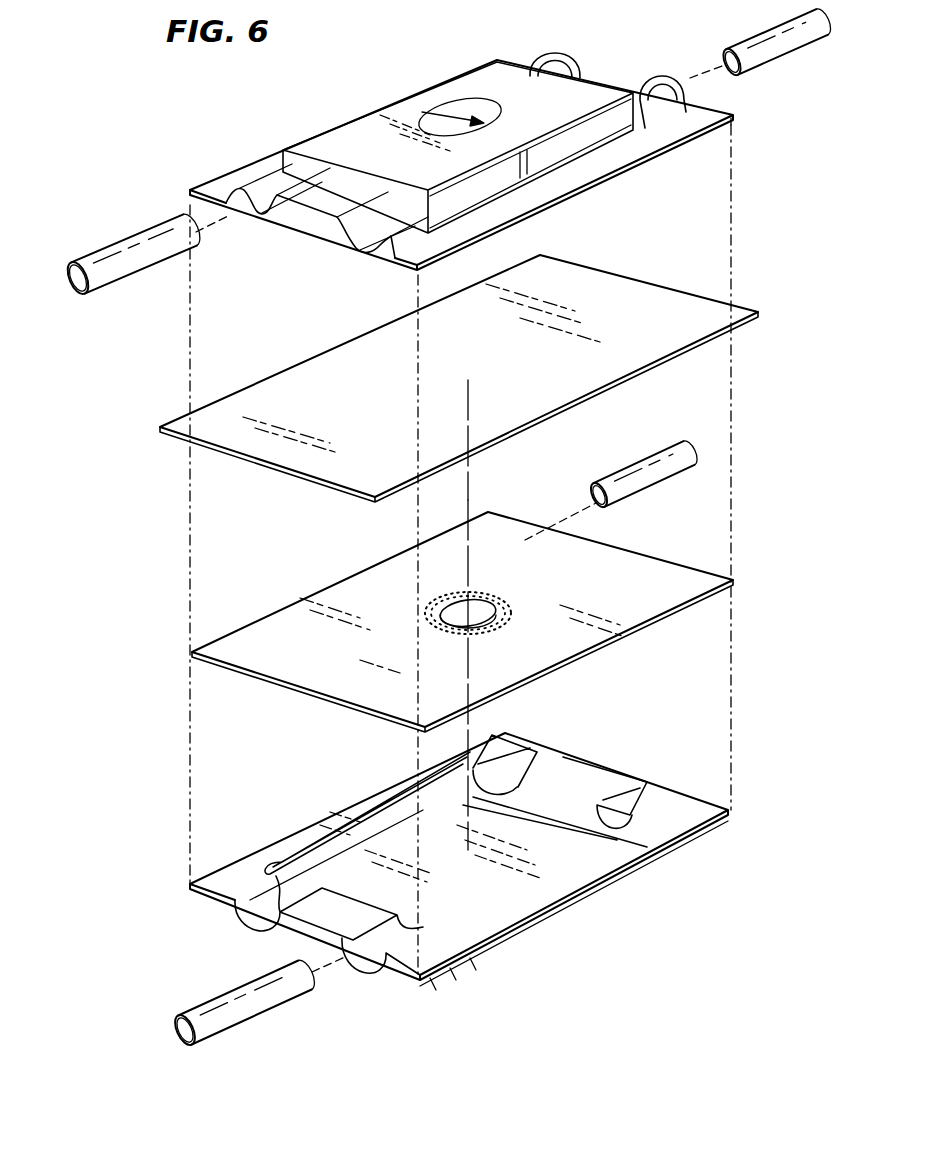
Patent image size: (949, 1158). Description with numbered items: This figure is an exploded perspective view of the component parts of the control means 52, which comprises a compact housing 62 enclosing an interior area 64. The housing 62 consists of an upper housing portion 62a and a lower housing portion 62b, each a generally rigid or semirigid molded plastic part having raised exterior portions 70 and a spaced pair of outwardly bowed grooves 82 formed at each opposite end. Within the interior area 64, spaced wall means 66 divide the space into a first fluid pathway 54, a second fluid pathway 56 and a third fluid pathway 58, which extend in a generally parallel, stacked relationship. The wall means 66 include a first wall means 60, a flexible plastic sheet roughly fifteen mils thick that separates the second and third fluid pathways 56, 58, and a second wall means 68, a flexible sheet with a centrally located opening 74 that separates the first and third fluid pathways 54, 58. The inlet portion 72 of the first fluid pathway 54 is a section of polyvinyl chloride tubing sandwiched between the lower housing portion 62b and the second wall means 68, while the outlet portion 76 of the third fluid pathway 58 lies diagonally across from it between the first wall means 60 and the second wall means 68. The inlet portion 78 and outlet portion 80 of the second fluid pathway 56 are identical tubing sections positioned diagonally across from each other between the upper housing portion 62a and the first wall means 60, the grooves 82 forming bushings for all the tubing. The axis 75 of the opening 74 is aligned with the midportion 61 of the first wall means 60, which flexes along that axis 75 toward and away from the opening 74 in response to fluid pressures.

The control means 52 is at (424, 136).
The first fluid pathway 54 is at (459, 856).
The second fluid pathway 56 is at (448, 378).
The third fluid pathway 58 is at (435, 622).
The first wall means 60 is at (240, 403).
The midportion of the first wall means 61 is at (468, 378).
The housing 62 is at (199, 171).
The upper housing portion 62a is at (518, 104).
The lower housing portion 62b is at (610, 860).
The interior area 64 is at (632, 247).
The wall means 66 is at (237, 569).
The second wall means 68 is at (248, 637).
The raised exterior portions 70 is at (352, 145).
The inlet portion 72 is at (263, 1015).
The opening 74 is at (478, 614).
The axis 75 is at (468, 492).
The outlet portion 76 is at (656, 468).
The inlet portion 78 is at (105, 258).
The outlet portion 80 is at (772, 40).
The grooves 82 is at (672, 78).